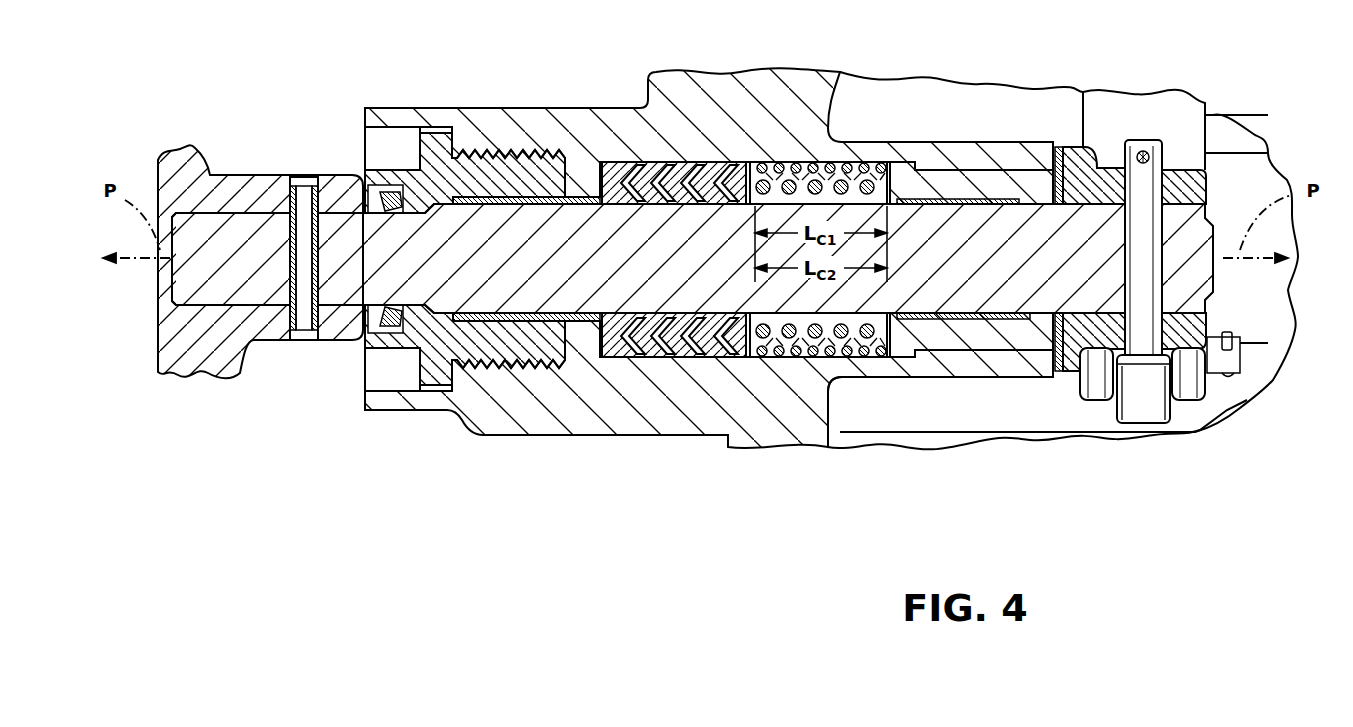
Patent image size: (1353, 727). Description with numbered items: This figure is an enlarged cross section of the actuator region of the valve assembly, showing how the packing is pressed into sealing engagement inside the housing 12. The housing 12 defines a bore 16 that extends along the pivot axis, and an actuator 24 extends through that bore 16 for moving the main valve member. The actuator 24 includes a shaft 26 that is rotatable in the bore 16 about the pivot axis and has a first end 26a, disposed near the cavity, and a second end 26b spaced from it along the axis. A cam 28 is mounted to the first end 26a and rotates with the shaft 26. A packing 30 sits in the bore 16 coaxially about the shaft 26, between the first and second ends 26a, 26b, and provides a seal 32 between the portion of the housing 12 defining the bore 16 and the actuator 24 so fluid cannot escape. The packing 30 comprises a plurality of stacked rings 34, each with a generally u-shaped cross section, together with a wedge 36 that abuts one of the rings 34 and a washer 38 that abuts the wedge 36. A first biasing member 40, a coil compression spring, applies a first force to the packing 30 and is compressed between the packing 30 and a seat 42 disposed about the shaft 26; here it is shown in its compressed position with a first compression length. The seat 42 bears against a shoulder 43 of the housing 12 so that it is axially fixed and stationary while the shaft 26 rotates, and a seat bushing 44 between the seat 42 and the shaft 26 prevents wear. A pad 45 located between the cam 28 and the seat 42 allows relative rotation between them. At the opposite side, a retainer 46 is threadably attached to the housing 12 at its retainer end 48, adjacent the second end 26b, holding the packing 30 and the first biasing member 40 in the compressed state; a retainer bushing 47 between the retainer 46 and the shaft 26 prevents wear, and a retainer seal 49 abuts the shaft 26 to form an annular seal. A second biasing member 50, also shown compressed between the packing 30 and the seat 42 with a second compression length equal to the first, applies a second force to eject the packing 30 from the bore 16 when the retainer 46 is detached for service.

The housing 12 is at (732, 95).
The bore 16 is at (390, 372).
The actuator 24 is at (1023, 368).
The shaft 26 is at (1045, 183).
The first end 26a is at (1200, 285).
The second end 26b is at (190, 242).
The cam 28 is at (1145, 408).
The packing 30 is at (668, 374).
The seal 32 is at (683, 252).
The rings 34 is at (700, 163).
The wedge 36 is at (748, 162).
The washer 38 is at (800, 162).
The first biasing member 40 is at (910, 163).
The seat 42 is at (958, 185).
The shoulder 43 is at (940, 180).
The seat bushing 44 is at (1008, 212).
The pad 45 is at (1062, 147).
The retainer 46 is at (437, 347).
The retainer bushing 47 is at (520, 193).
The retainer end 48 is at (437, 143).
The retainer seal 49 is at (378, 188).
The second biasing member 50 is at (843, 380).